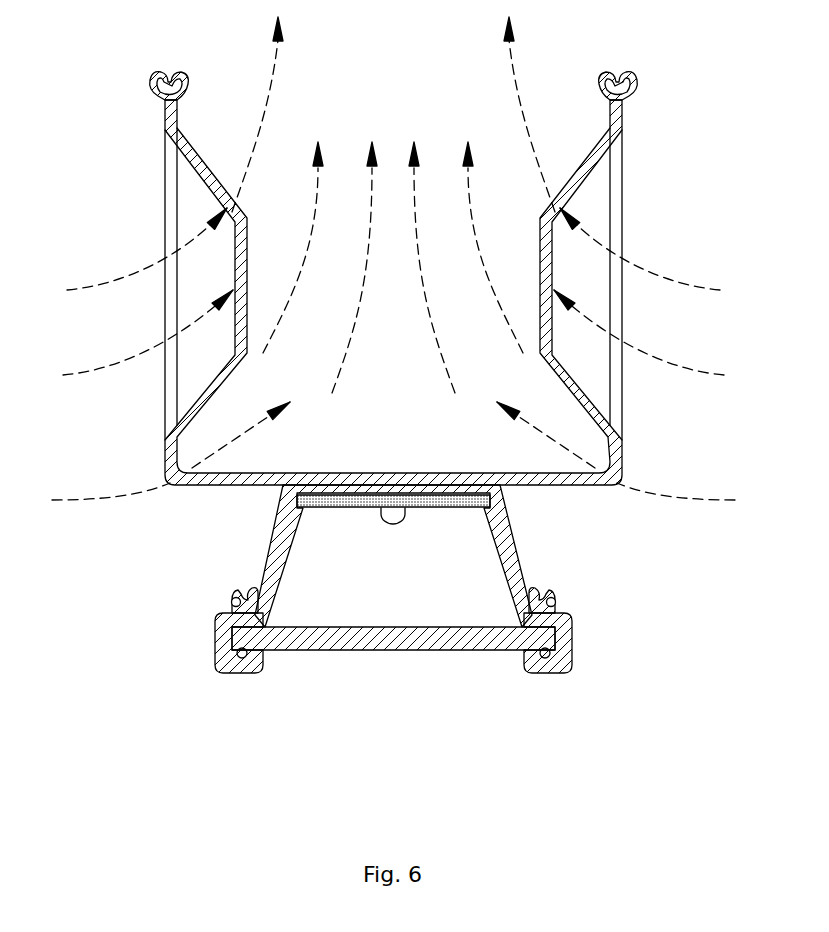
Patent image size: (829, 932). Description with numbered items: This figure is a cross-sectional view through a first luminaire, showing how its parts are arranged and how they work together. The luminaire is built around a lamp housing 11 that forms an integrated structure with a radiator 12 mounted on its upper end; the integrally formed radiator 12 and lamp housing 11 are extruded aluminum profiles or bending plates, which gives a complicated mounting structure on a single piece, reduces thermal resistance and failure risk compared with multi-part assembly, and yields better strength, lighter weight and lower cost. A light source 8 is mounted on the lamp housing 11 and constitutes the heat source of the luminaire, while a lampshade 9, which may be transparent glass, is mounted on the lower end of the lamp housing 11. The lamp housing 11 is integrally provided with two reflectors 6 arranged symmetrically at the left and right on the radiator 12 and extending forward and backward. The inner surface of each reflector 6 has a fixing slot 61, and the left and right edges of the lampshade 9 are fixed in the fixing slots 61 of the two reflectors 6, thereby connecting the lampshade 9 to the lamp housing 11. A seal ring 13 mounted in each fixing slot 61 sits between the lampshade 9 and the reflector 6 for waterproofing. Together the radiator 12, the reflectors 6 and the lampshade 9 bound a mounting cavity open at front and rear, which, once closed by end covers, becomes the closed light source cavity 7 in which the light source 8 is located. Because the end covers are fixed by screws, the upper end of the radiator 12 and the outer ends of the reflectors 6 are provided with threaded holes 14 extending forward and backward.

The reflector 6 is at (396, 621).
The light source cavity 7 is at (435, 600).
The light source 8 is at (297, 500).
The lampshade 9 is at (333, 638).
The lamp housing 11 is at (510, 555).
The radiator 12 is at (622, 440).
The seal ring 13 is at (545, 658).
The threaded hole 14 is at (620, 82).
The fixing slot 61 is at (217, 643).